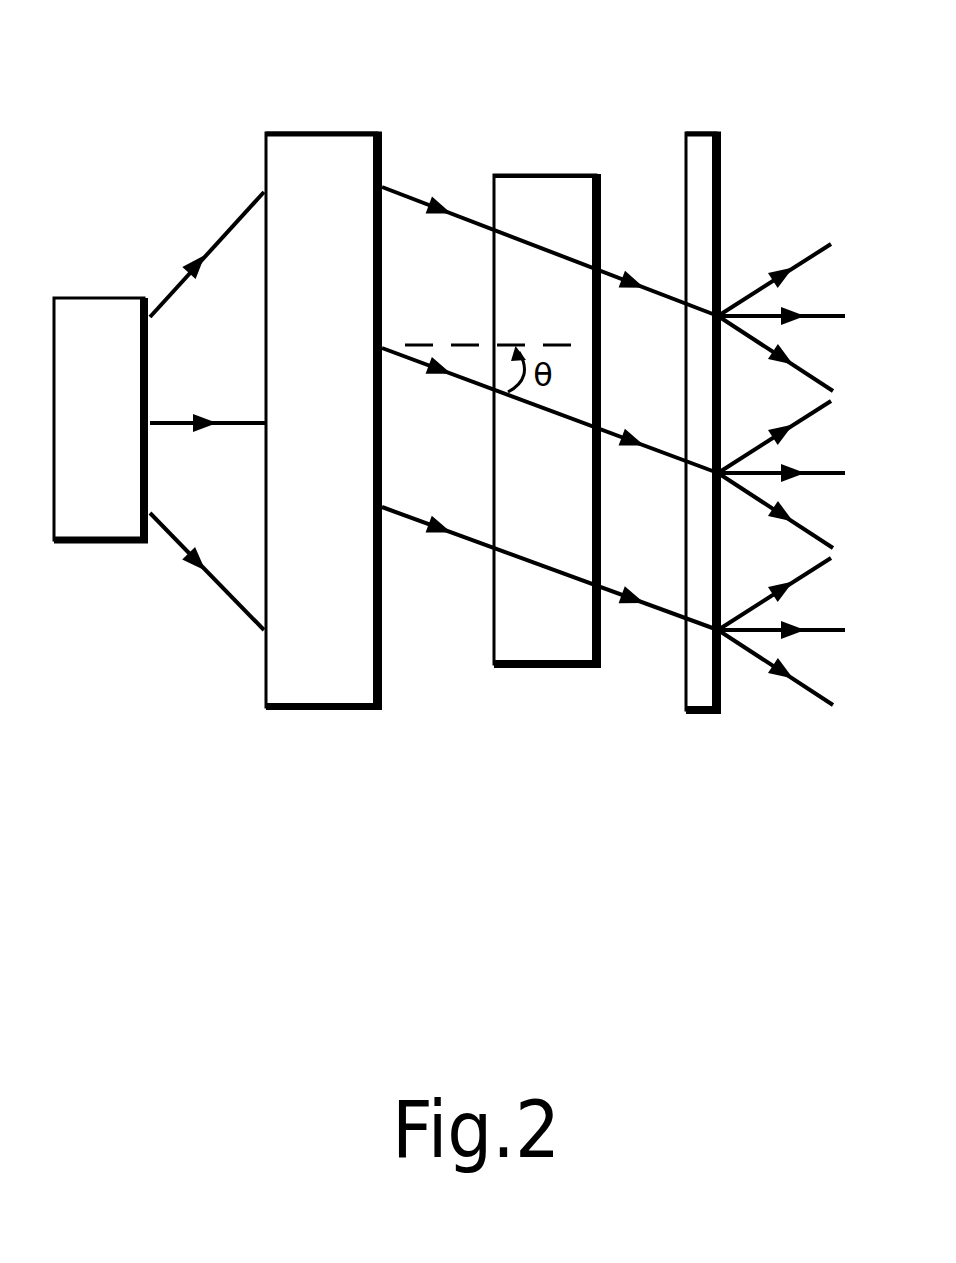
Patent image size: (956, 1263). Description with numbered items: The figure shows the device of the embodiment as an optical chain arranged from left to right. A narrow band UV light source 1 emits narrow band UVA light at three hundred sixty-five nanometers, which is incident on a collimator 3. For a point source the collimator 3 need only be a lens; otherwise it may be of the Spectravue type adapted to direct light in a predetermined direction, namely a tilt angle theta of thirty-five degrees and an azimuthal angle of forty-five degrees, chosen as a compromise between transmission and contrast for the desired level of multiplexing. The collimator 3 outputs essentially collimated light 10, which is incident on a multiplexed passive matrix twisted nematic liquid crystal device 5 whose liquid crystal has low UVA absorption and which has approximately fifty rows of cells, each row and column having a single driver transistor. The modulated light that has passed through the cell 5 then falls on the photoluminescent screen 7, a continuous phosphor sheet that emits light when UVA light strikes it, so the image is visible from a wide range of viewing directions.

The narrow band UV light source 1 is at (85, 543).
The collimator 3 is at (310, 710).
The multiplexed passive matrix twisted nematic liquid crystal device 5 is at (512, 670).
The photoluminescent screen 7 is at (702, 715).
The collimated light 10 is at (418, 197).